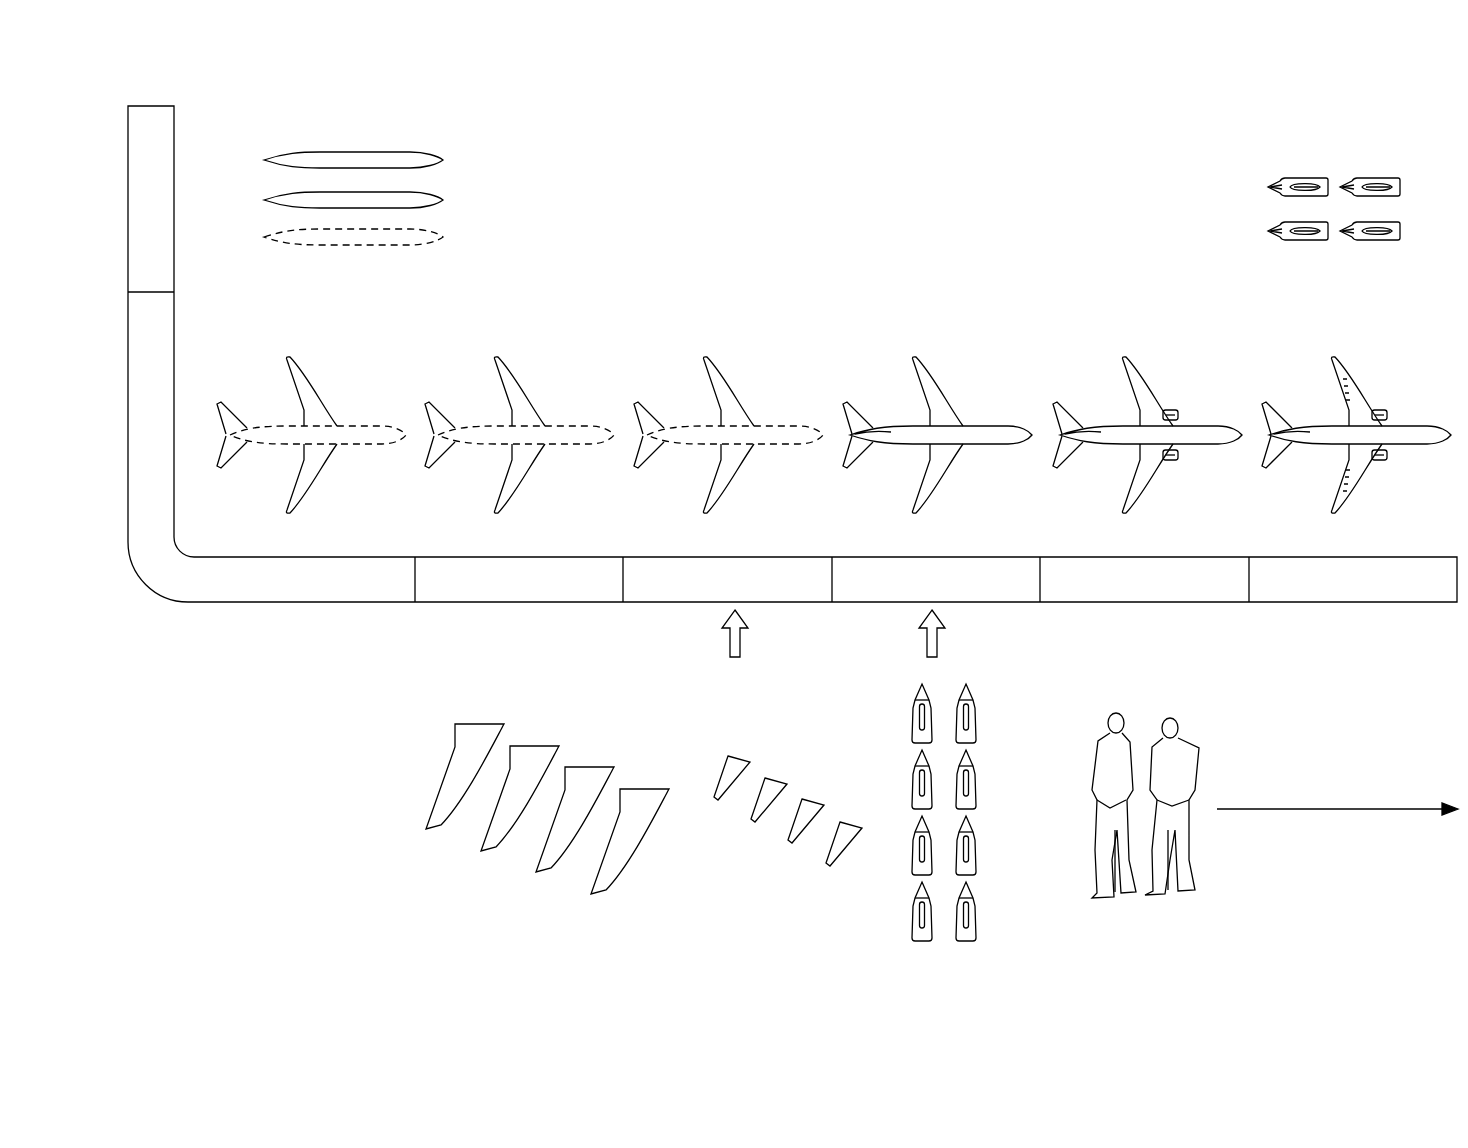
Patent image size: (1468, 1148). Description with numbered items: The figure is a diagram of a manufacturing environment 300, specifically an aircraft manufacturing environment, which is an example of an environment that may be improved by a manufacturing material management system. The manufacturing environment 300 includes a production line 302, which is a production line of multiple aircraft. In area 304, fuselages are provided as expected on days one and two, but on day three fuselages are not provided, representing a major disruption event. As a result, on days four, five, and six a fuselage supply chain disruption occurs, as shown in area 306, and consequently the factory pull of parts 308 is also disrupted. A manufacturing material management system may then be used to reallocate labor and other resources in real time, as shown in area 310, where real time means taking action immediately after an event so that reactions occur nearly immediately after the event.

The manufacturing environment 300 is at (1086, 110).
The production line 302 is at (326, 602).
The area 304 is at (360, 138).
The area 306 is at (362, 426).
The parts 308 is at (767, 853).
The area 310 is at (1340, 810).